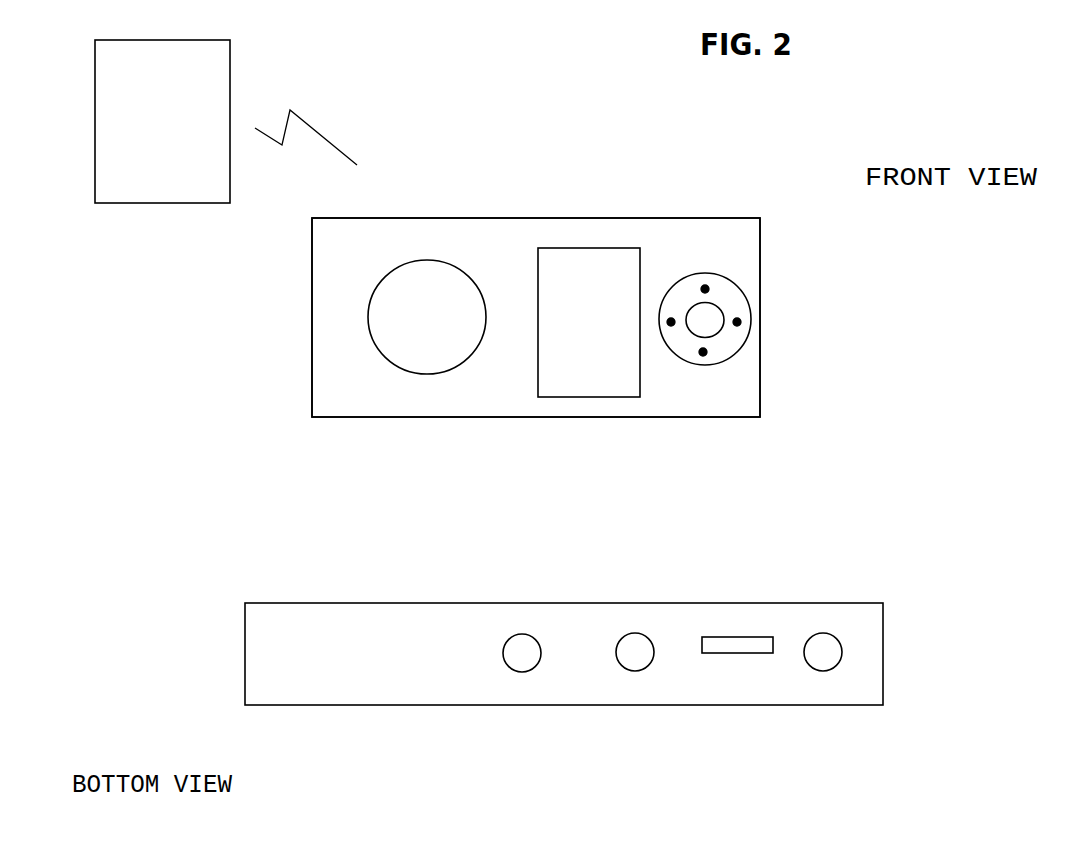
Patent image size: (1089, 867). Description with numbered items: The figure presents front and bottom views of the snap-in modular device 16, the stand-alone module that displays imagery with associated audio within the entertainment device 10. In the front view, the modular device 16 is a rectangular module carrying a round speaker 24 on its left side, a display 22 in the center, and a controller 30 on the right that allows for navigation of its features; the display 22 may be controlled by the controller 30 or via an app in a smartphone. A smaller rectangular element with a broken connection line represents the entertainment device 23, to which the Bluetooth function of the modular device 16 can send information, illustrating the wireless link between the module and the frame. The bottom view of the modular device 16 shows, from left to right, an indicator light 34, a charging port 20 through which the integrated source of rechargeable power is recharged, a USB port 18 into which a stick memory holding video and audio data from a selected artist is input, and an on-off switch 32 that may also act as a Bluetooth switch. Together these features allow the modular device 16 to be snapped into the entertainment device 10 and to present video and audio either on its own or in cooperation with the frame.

The entertainment device 10 is at (197, 250).
The modular device 16 is at (815, 298).
The USB port 18 is at (737, 653).
The charging port 20 is at (633, 668).
The display 22 is at (585, 407).
The entertainment device 23 is at (275, 82).
The speaker 24 is at (352, 358).
The controller 30 is at (765, 348).
The on-off switch 32 is at (822, 668).
The indicator light 34 is at (508, 677).